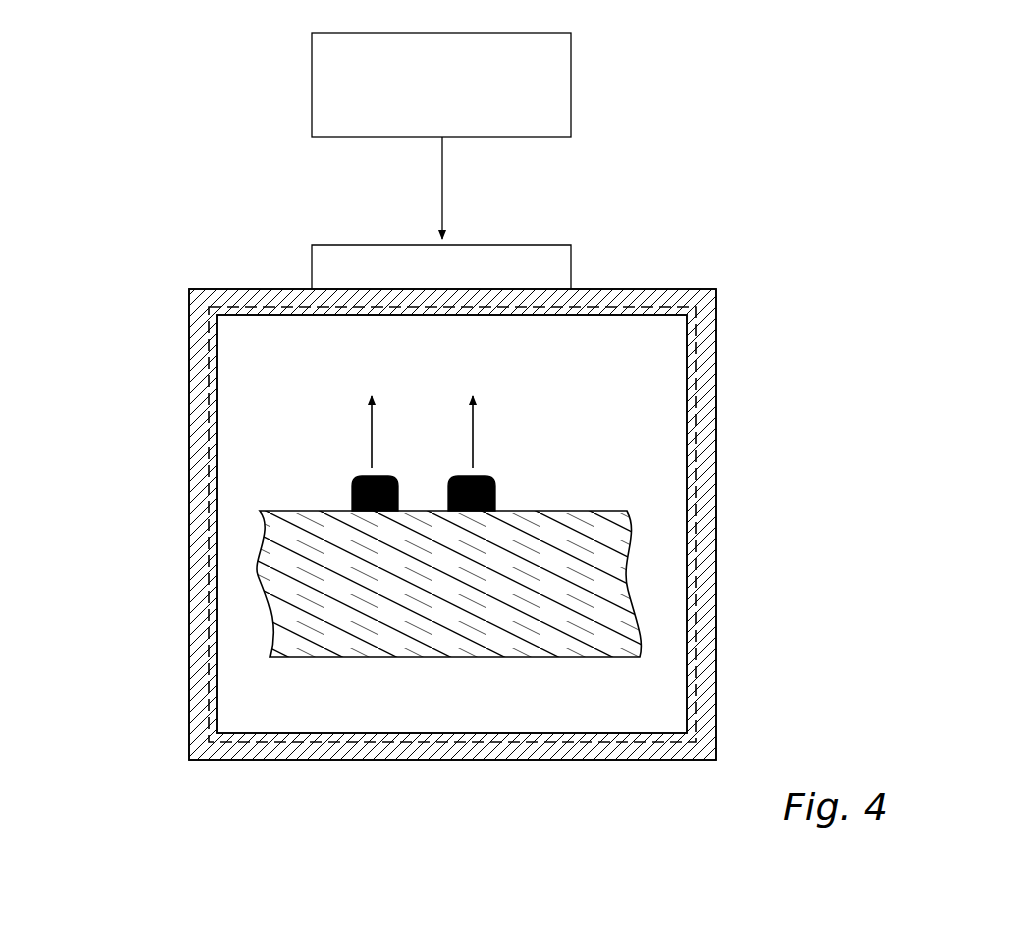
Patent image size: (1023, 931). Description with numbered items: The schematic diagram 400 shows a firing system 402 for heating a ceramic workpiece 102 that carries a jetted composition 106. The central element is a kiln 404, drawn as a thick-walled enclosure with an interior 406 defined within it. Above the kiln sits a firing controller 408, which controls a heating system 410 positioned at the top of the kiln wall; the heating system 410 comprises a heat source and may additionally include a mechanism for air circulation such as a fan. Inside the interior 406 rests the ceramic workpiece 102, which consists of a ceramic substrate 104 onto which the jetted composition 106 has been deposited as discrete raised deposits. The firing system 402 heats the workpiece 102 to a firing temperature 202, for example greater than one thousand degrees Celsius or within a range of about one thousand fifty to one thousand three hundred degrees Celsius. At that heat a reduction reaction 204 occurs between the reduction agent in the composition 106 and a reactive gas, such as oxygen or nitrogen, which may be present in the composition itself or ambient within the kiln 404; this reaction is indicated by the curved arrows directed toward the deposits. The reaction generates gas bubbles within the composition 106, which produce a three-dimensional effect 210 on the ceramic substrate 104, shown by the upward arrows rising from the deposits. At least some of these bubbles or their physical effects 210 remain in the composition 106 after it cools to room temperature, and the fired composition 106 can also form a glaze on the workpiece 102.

The schematic diagram 400 is at (896, 132).
The firing system 402 is at (453, 477).
The kiln 404 is at (647, 288).
The interior 406 is at (664, 393).
The firing controller 408 is at (571, 100).
The heating system 410 is at (512, 244).
The firing temperature 202 is at (210, 643).
The ceramic workpiece 102 is at (652, 477).
The ceramic substrate 104 is at (258, 572).
The jetted composition 106 is at (343, 479).
The reduction reaction 204 is at (447, 463).
The three-dimensional effect 210 is at (366, 442).